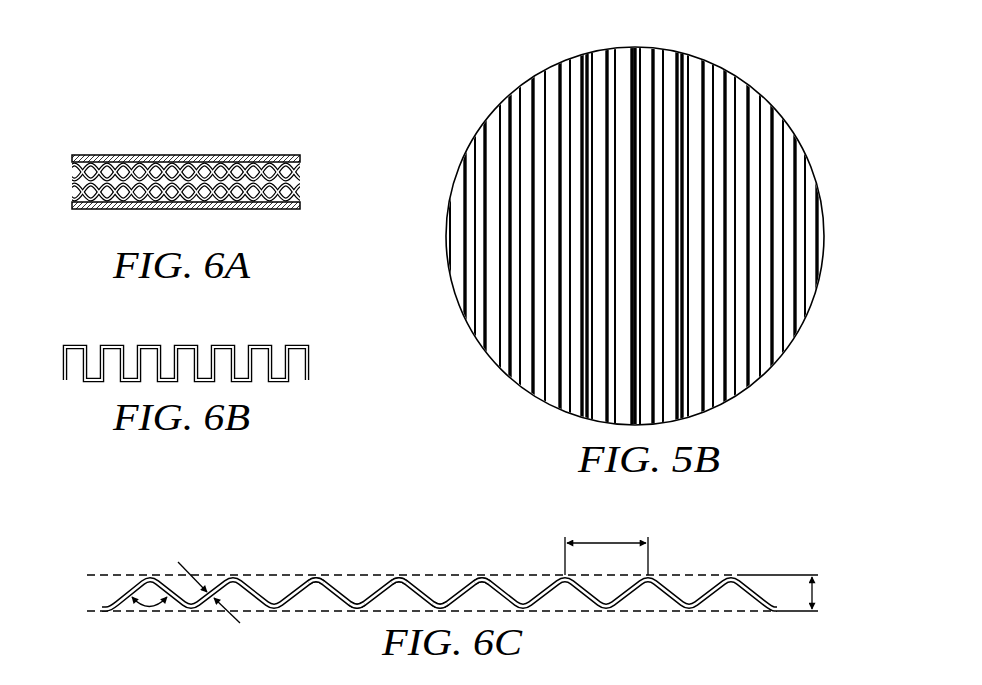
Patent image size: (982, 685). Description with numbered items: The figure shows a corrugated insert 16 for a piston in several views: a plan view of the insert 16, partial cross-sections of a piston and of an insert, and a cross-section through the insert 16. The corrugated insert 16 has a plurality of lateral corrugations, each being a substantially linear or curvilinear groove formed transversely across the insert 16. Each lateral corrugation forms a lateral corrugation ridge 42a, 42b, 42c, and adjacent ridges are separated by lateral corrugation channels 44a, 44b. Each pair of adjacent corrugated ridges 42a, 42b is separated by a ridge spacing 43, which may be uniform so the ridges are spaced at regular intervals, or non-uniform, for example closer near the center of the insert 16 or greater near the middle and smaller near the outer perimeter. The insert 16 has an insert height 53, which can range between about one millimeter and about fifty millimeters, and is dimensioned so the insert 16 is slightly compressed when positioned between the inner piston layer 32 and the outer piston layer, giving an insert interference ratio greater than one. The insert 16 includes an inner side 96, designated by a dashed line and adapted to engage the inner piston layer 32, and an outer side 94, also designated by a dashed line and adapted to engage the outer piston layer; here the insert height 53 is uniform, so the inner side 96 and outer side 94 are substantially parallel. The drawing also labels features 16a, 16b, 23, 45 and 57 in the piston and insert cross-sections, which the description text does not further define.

In FIG. 5B, the corrugated insert 16 is at (445, 140).
In FIG. 6B, the corrugated insert 16 is at (313, 340).
In FIG. 6C, the corrugated insert 16 is at (132, 522).
In FIG. 6A, the upper corrugated layer 16a is at (306, 170).
In FIG. 6A, the lower corrugated layer 16b is at (306, 192).
In FIG. 6A, the top plate 23 is at (114, 160).
In FIG. 6A, the inner piston layer 32 is at (117, 209).
In FIG. 5B, the lateral corrugation ridge 42a is at (587, 55).
In FIG. 6C, the lateral corrugation ridge 42a is at (317, 571).
In FIG. 5B, the lateral corrugation ridge 42b is at (635, 50).
In FIG. 6C, the lateral corrugation ridge 42b is at (400, 571).
In FIG. 5B, the lateral corrugation ridge 42c is at (682, 62).
In FIG. 6C, the lateral corrugation ridge 42c is at (482, 571).
In FIG. 6C, the ridge spacing 43 is at (600, 543).
In FIG. 6C, the lateral corrugation channel 44a is at (360, 588).
In FIG. 6C, the lateral corrugation channel 44b is at (442, 588).
In FIG. 6C, the included angle 45 is at (148, 607).
In FIG. 6C, the insert height 53 is at (814, 593).
In FIG. 6C, the sheet thickness 57 is at (190, 563).
In FIG. 6C, the outer side 94 is at (278, 573).
In FIG. 6C, the inner side 96 is at (315, 612).